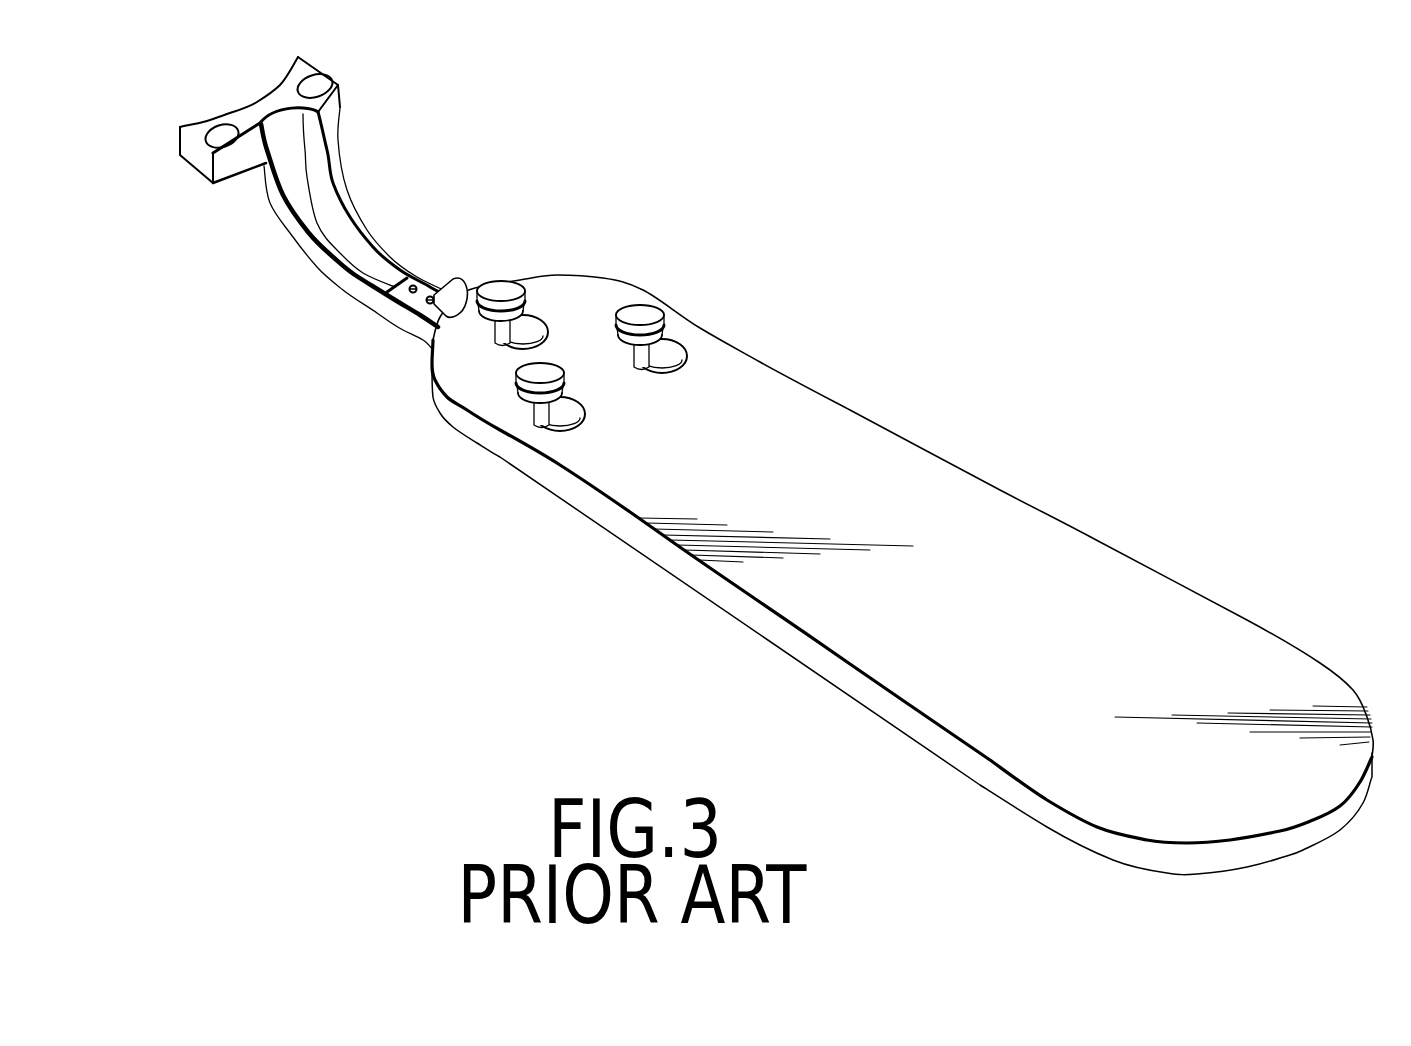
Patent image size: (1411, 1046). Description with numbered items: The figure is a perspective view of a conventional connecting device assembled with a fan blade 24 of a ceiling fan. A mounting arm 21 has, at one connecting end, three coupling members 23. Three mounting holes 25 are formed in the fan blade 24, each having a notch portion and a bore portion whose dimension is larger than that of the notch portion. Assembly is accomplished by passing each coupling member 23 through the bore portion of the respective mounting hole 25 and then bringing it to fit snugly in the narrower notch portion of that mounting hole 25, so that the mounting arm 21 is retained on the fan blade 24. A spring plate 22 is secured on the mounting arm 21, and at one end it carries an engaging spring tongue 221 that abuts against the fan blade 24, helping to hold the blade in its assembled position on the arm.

The mounting arm 21 is at (320, 267).
The spring plate 22 is at (410, 292).
The engaging spring tongue 221 is at (455, 287).
The coupling members 23 is at (636, 313).
The fan blade 24 is at (999, 507).
The mounting holes 25 is at (687, 350).